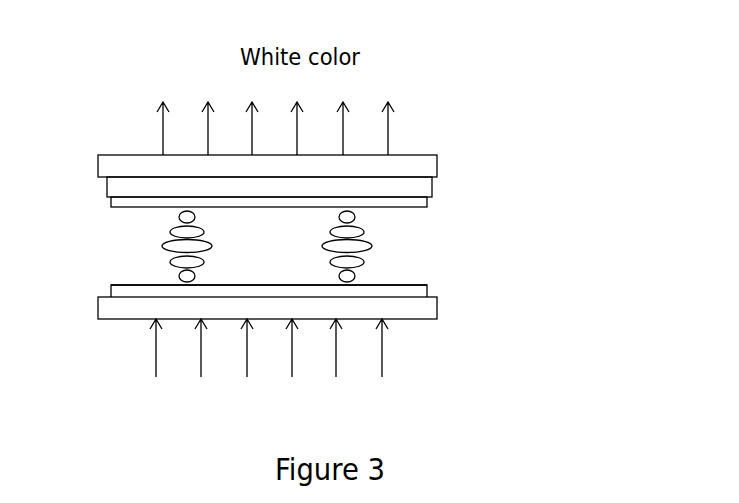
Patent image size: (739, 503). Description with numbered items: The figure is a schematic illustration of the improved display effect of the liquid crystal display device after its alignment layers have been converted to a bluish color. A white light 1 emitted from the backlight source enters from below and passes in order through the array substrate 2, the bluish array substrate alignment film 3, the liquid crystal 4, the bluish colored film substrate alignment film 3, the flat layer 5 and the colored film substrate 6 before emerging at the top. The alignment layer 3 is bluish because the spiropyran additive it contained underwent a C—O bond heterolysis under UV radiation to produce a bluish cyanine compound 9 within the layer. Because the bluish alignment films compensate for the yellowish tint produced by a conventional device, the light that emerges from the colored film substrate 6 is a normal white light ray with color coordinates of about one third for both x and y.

The white light 1 is at (387, 357).
The array substrate 2 is at (427, 315).
The alignment layer 3 is at (405, 285).
The liquid crystal 4 is at (352, 245).
The flat layer 5 is at (420, 188).
The colored film substrate 6 is at (420, 167).
The bluish cyanine compound 9 is at (413, 290).